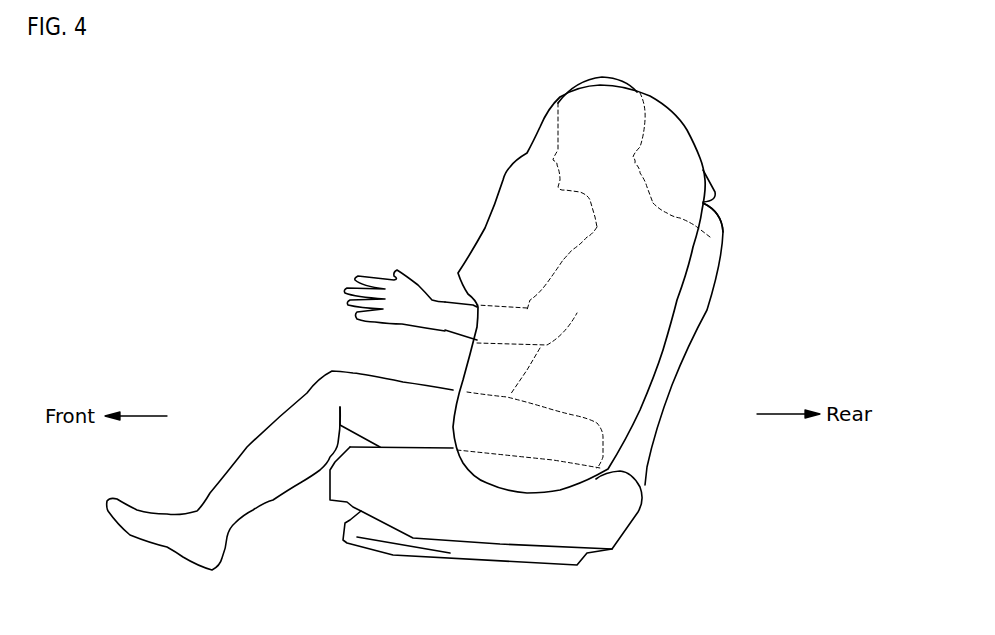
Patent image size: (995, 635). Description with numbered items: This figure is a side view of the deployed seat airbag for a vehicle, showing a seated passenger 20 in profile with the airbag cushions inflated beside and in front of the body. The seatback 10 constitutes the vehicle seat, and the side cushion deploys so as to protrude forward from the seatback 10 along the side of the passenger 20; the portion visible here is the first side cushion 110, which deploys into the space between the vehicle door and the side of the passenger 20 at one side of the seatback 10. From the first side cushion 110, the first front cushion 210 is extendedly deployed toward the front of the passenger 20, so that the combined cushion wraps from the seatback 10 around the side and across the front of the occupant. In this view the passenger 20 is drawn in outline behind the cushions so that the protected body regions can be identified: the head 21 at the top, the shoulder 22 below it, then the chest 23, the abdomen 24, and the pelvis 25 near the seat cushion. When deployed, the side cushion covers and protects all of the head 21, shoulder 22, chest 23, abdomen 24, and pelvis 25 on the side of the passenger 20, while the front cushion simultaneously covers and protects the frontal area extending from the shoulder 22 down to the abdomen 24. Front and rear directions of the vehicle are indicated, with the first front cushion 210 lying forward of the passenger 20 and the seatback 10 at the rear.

The seatback 10 is at (708, 257).
The first side cushion 110 is at (677, 155).
The first front cushion 210 is at (487, 228).
The passenger 20 is at (315, 361).
The head 21 is at (647, 127).
The shoulder 22 is at (677, 215).
The chest 23 is at (600, 282).
The abdomen 24 is at (540, 372).
The pelvis 25 is at (540, 407).